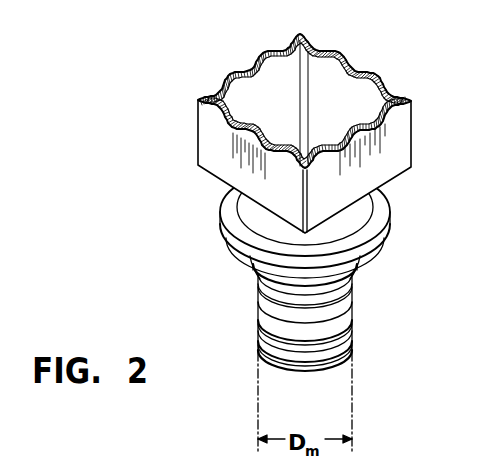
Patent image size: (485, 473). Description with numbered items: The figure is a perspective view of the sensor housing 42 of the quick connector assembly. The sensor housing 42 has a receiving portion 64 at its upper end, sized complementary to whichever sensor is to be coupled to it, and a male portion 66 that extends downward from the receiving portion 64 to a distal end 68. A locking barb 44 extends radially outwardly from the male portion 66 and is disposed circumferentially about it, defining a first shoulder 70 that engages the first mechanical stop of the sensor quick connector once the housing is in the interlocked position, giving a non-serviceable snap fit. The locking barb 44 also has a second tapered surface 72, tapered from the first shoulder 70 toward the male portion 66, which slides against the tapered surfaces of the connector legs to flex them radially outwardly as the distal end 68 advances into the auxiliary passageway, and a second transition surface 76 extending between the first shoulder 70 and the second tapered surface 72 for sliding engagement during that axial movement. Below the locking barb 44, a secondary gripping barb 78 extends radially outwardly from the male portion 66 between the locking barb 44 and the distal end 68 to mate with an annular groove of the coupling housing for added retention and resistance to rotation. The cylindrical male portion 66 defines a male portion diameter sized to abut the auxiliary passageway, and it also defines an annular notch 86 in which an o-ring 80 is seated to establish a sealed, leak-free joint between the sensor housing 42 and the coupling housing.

The sensor housing 42 is at (383, 49).
The locking barb 44 is at (392, 233).
The receiving portion 64 is at (198, 128).
The male portion 66 is at (258, 297).
The distal end 68 is at (300, 371).
The first shoulder 70 is at (383, 214).
The second tapered surface 72 is at (363, 272).
The second transition surface 76 is at (226, 246).
The secondary gripping barb 78 is at (348, 318).
The o-ring 80 is at (350, 320).
The annular notch 86 is at (258, 331).